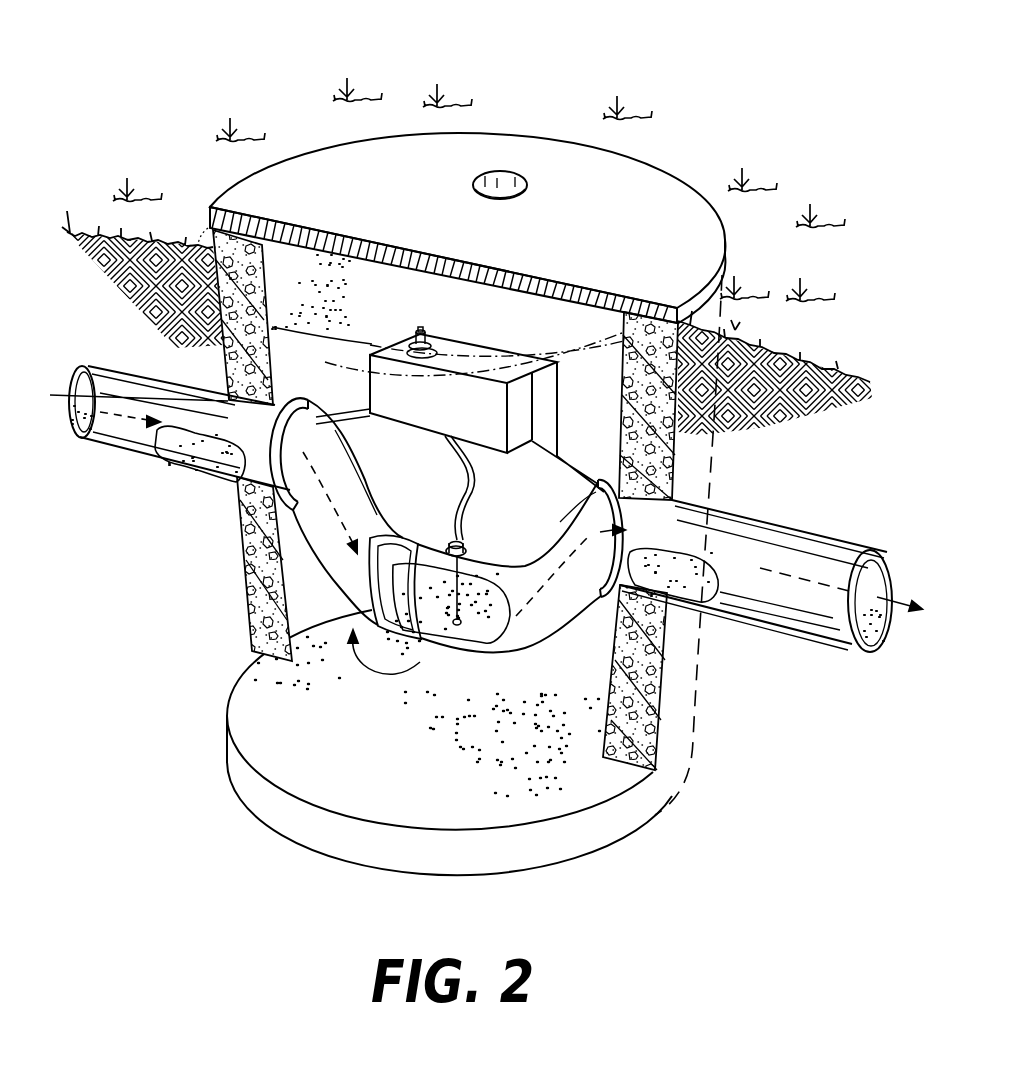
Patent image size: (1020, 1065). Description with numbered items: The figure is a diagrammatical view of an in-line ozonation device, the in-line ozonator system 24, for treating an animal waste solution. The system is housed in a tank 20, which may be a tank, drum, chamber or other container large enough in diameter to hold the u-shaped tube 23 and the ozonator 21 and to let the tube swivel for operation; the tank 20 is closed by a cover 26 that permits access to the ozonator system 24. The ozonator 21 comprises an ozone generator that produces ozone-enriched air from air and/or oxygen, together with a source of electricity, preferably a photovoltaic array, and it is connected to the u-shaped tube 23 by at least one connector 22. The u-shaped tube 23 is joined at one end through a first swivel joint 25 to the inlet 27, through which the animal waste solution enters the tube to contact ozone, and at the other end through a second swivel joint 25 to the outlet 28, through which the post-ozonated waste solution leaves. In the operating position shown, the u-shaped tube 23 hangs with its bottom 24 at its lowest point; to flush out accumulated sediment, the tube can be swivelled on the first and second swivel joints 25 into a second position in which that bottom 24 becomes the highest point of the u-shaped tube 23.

The tank 20 is at (205, 516).
The ozonator 21 is at (408, 340).
The connector 22 is at (352, 418).
The u-shaped tube 23 is at (512, 646).
The in-line ozonator system 24 is at (282, 92).
The swivel joint 25 is at (272, 440).
The cover 26 is at (524, 152).
The inlet 27 is at (110, 366).
The outlet 28 is at (790, 527).